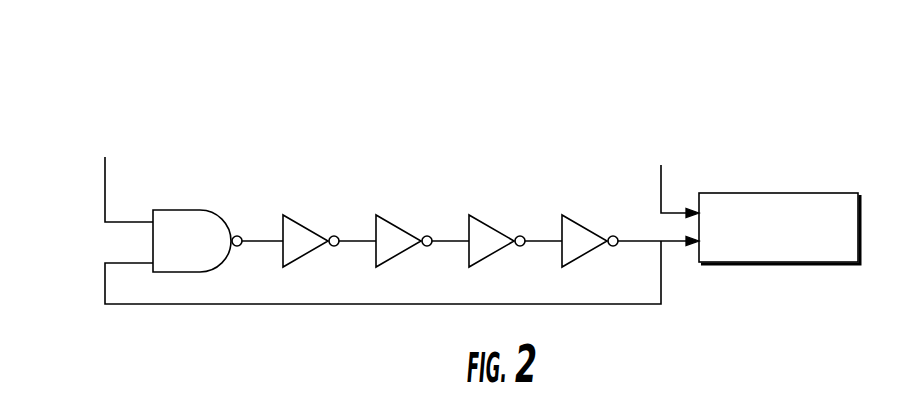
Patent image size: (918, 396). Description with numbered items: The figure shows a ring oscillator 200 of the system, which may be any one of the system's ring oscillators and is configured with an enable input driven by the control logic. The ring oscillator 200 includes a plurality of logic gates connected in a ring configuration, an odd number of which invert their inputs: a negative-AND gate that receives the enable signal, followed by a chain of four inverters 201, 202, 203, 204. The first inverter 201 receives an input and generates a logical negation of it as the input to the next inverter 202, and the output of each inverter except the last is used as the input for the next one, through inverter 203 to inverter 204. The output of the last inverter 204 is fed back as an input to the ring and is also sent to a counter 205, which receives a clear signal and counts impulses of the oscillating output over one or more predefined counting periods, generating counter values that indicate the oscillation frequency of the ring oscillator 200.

The ring oscillator 200 is at (184, 76).
The inverter 201 is at (312, 210).
The inverter 202 is at (411, 210).
The inverter 203 is at (502, 210).
The inverter 204 is at (596, 210).
The counter 205 is at (793, 276).